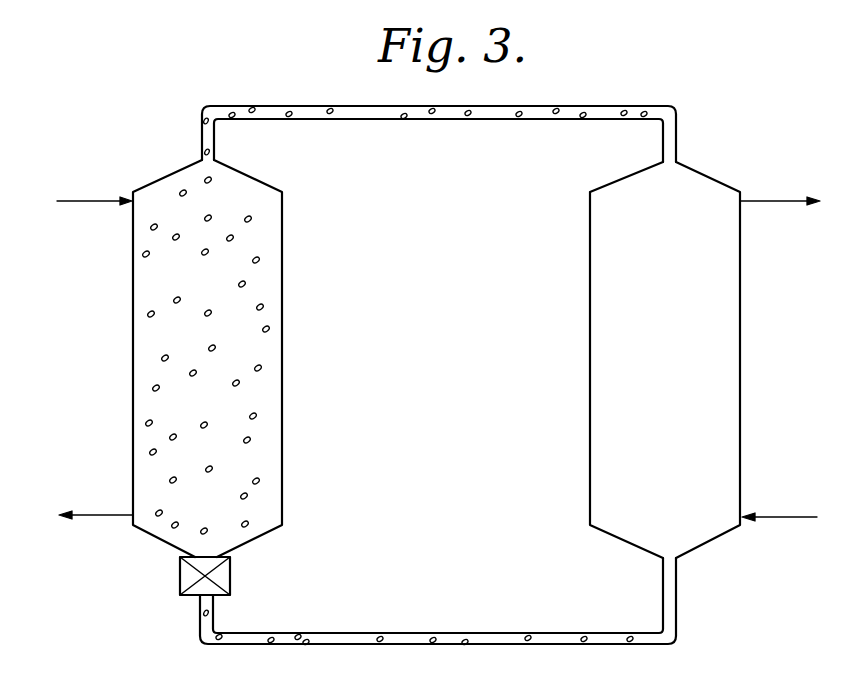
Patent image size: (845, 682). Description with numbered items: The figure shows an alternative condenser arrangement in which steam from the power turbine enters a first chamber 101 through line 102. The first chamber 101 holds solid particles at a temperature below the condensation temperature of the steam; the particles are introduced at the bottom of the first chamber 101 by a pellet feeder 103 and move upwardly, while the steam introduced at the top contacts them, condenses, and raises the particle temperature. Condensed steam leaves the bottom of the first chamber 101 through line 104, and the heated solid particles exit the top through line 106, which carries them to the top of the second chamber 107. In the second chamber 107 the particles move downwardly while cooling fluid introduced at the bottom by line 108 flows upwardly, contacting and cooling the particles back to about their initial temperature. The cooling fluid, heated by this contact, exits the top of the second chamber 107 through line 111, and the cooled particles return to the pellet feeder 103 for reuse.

The first chamber 101 is at (283, 352).
The line 102 is at (93, 202).
The pellet feeder 103 is at (231, 577).
The line 104 is at (110, 493).
The line 106 is at (388, 106).
The second chamber 107 is at (741, 379).
The line 108 is at (786, 516).
The line 111 is at (787, 178).